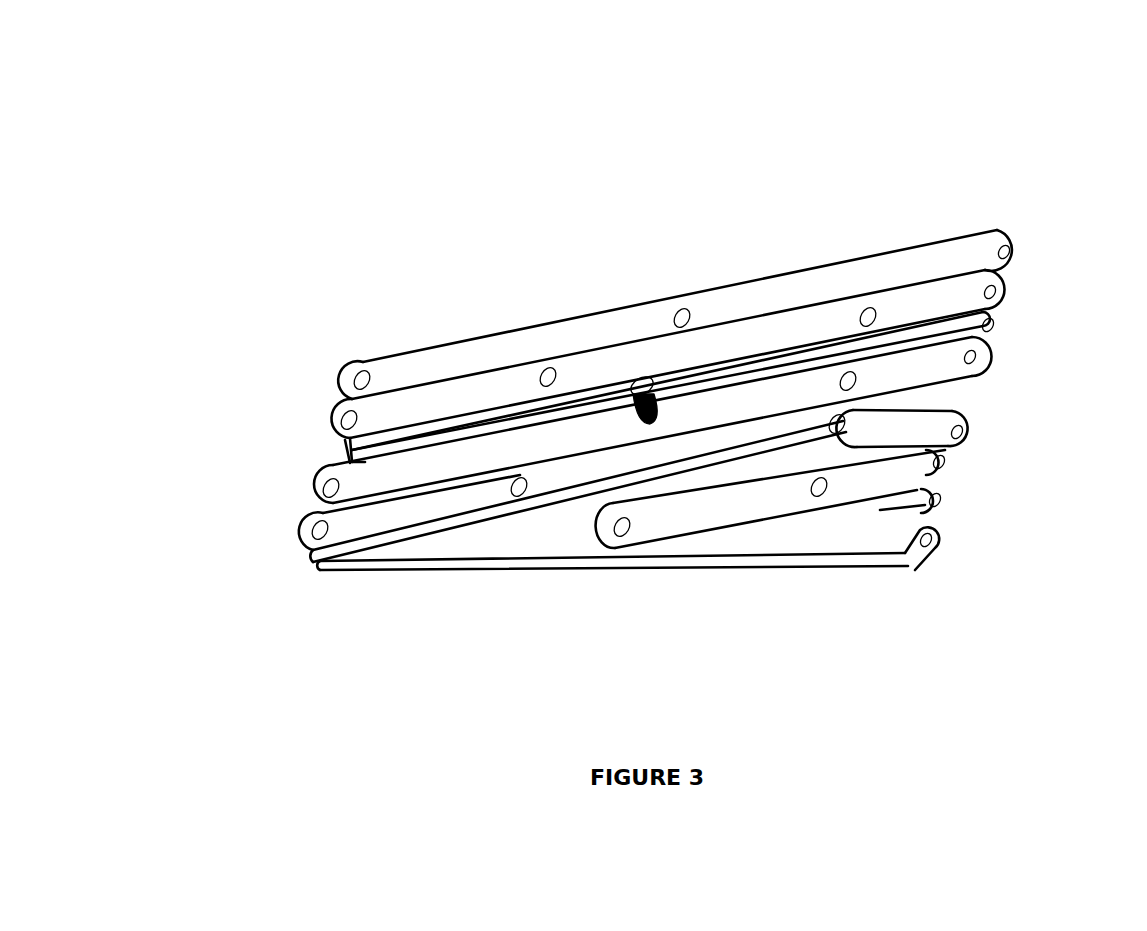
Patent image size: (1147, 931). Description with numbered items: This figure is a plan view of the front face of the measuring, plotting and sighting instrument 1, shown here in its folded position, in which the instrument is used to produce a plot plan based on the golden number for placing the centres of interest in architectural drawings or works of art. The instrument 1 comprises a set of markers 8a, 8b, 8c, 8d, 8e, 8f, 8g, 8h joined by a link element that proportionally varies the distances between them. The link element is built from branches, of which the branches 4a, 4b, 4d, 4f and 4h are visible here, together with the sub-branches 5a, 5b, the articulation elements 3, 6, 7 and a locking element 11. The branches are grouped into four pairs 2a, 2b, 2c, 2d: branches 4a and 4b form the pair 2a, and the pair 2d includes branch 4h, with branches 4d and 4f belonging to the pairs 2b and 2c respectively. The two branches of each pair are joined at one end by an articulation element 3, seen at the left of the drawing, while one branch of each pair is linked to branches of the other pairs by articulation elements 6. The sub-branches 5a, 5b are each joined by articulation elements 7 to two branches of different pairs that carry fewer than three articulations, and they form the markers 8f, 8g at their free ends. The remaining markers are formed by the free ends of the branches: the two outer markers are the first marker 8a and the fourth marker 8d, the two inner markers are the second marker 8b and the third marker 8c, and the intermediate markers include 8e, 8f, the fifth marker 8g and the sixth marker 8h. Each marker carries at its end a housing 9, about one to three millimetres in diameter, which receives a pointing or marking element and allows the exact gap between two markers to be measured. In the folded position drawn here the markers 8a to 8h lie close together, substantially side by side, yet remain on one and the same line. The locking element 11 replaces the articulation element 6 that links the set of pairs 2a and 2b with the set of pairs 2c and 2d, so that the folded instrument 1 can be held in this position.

The measuring and/or plotting and/or sighting instrument 1 is at (1017, 88).
The pair of branches 2a is at (314, 549).
The pair of branches 2b is at (326, 494).
The pair of branches 2c is at (344, 414).
The pair of branches 2d is at (358, 354).
The articulation element 3 is at (315, 547).
The branch 4a is at (433, 550).
The branch 4b is at (380, 520).
The branch 4d is at (447, 450).
The branch 4f is at (458, 398).
The branch 4h is at (470, 352).
The sub-branch 5a is at (850, 503).
The sub-branch 5b is at (942, 340).
The articulation element 6 is at (517, 477).
The articulation element 7 is at (684, 310).
The first marker 8a is at (932, 548).
The second marker 8b is at (963, 420).
The third marker 8c is at (977, 372).
The fourth marker 8d is at (1006, 241).
The intermediate marker 8e is at (939, 505).
The intermediate marker 8f is at (913, 486).
The fifth marker 8g is at (996, 331).
The sixth marker 8h is at (1000, 289).
The housing 9 is at (1012, 252).
The locking element 11 is at (648, 383).